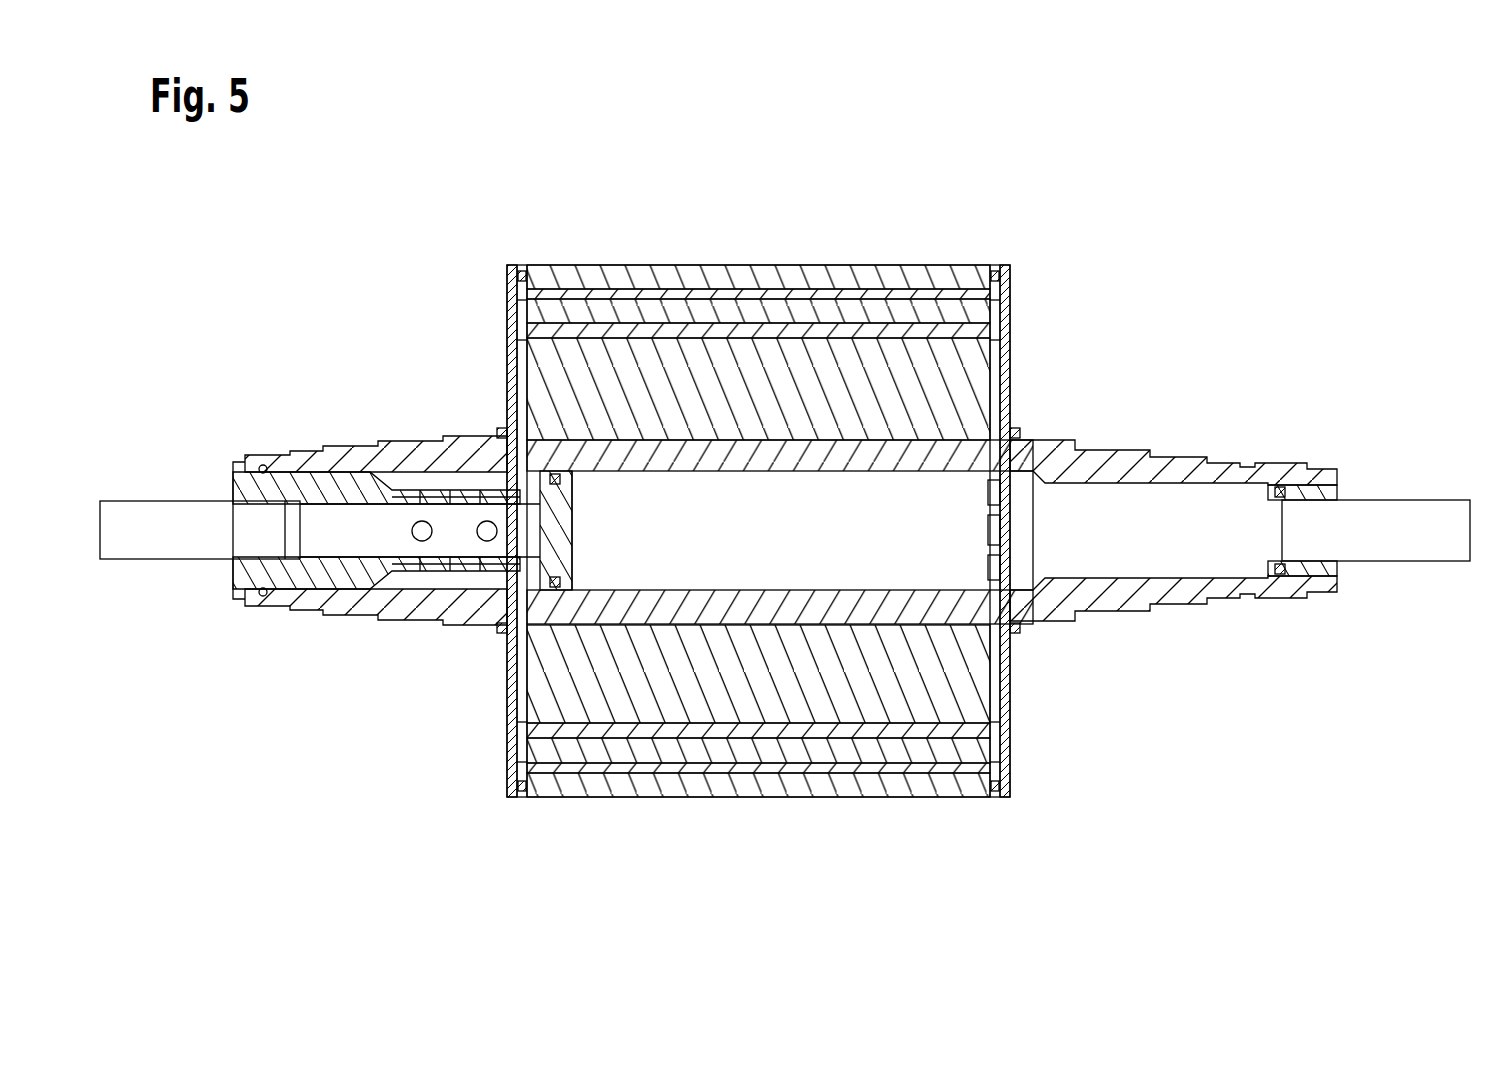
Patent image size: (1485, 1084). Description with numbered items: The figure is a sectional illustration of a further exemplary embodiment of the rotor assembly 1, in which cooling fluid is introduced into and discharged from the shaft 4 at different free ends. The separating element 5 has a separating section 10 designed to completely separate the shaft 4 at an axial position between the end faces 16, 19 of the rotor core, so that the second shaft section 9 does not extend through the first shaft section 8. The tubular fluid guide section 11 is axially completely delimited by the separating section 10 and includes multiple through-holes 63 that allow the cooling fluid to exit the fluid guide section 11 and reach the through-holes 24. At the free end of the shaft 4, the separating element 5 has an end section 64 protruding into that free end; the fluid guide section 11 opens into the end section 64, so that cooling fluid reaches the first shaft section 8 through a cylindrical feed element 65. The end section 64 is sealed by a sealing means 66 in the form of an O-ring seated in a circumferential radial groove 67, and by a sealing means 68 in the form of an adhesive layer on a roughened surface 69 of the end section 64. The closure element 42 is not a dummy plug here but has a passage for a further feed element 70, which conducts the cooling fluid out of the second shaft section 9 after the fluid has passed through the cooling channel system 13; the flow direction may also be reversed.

The rotor assembly 1 is at (1262, 287).
The shaft 4 is at (1115, 460).
The separating element 5 is at (340, 480).
The first shaft section 8 is at (342, 534).
The second shaft section 9 is at (1158, 546).
The separating section 10 is at (505, 575).
The fluid guide section 11 is at (420, 490).
The cooling channel system 13 is at (489, 376).
The end face 16 is at (514, 703).
The end face 19 is at (1003, 703).
The through-holes 24 is at (490, 455).
The closure element 42 is at (1328, 478).
The through-holes 63 is at (397, 490).
The end section 64 is at (258, 591).
The cylindrical feed element 65 is at (133, 565).
The sealing means 66 is at (262, 462).
The radial groove 67 is at (258, 469).
The sealing means 68 is at (290, 598).
The roughened surface 69 is at (296, 468).
The further feed element 70 is at (1432, 510).